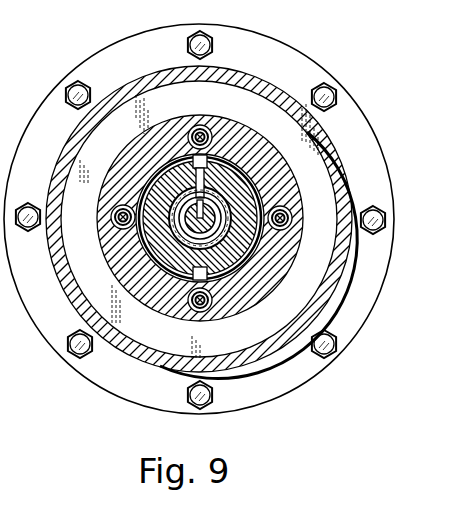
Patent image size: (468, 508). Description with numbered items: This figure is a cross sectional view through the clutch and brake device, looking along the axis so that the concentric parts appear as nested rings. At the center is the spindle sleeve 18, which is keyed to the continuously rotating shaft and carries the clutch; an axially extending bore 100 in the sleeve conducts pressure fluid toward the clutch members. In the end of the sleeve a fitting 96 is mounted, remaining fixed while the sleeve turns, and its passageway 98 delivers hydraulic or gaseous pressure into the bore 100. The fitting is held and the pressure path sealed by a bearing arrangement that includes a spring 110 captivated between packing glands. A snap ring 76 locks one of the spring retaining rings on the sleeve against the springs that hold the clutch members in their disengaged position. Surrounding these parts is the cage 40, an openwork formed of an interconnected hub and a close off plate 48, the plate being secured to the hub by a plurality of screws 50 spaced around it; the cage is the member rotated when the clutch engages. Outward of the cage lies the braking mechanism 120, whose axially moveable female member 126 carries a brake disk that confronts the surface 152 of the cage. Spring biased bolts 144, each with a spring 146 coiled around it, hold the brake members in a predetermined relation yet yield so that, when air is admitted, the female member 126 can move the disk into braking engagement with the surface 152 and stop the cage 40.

The spindle sleeve 18 is at (252, 178).
The cage 40 is at (137, 414).
The close off plate 48 is at (98, 379).
The screws 50 is at (0, 224).
The snap ring 76 is at (237, 319).
The fitting 96 is at (217, 203).
The passageway 98 is at (225, 230).
The axially extending bore 100 is at (184, 159).
The spring 110 is at (182, 230).
The braking mechanism 120 is at (73, 305).
The axially moveable female member 126 is at (338, 278).
The spring biased bolts 144 is at (198, 130).
The spring 146 is at (207, 131).
The confronting surface 152 is at (347, 163).